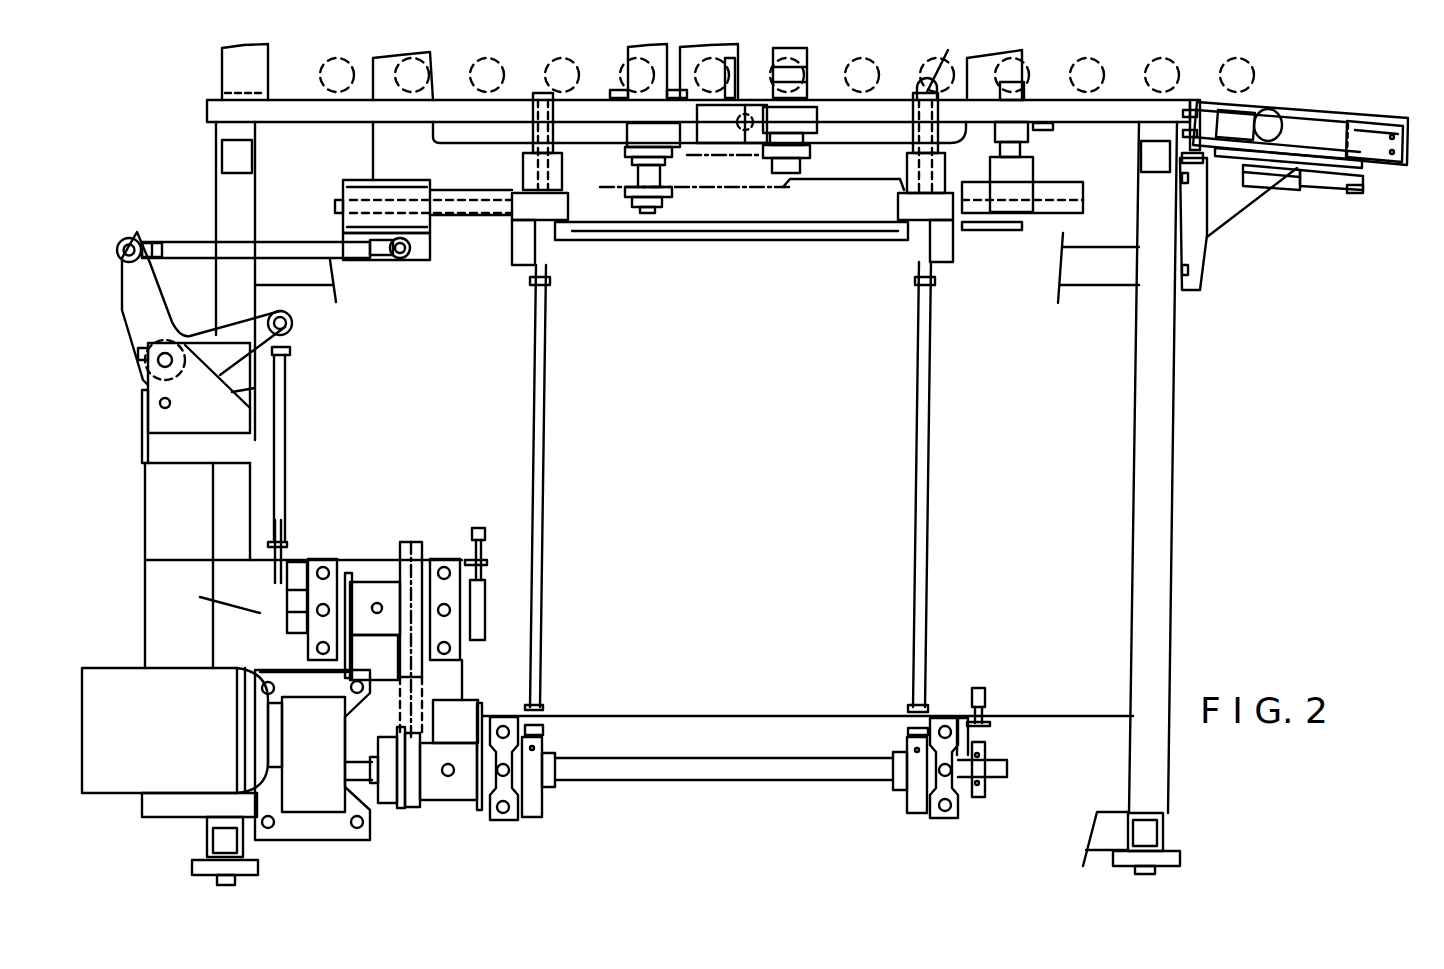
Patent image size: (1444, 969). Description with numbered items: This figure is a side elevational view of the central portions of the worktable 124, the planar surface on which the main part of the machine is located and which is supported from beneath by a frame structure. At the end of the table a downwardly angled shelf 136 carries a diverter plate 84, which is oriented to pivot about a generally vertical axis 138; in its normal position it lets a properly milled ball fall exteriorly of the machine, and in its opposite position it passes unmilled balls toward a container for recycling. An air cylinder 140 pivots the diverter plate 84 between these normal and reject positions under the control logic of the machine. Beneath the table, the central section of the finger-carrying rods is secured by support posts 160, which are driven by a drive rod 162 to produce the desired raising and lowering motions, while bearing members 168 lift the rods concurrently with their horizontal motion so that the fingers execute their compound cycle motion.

The diverter plate 84 is at (1302, 146).
The worktable 124 is at (885, 108).
The downwardly angled shelf 136 is at (1316, 150).
The vertical axis 138 is at (1195, 102).
The air cylinder 140 is at (1273, 178).
The support post 160 is at (542, 582).
The drive rod 162 is at (753, 773).
The bearing member 168 is at (540, 93).